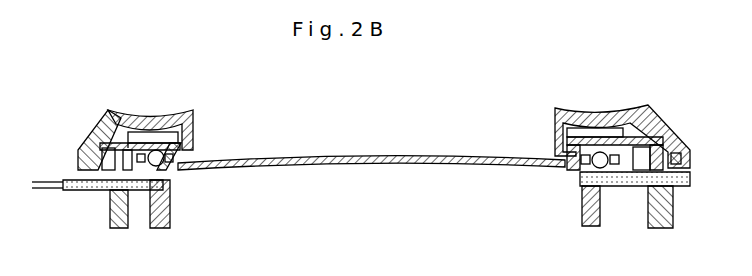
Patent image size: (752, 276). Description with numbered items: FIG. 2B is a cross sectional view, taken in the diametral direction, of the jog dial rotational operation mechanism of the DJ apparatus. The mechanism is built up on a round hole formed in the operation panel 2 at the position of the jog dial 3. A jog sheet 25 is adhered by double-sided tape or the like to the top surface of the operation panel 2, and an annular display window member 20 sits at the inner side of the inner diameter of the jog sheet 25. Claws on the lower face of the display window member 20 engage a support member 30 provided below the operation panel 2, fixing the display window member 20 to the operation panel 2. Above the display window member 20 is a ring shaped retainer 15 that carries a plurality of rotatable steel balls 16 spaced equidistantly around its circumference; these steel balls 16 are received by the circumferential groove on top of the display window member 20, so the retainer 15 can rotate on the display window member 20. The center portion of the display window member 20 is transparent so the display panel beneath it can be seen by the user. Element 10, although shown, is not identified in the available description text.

The operation panel 2 is at (90, 192).
The jog dial 3 is at (124, 110).
The clamp member 10 is at (100, 138).
The retainer 15 is at (192, 138).
The steel balls 16 is at (167, 180).
The display window member 20 is at (329, 157).
The jog sheet 25 is at (62, 192).
The support member 30 is at (663, 208).